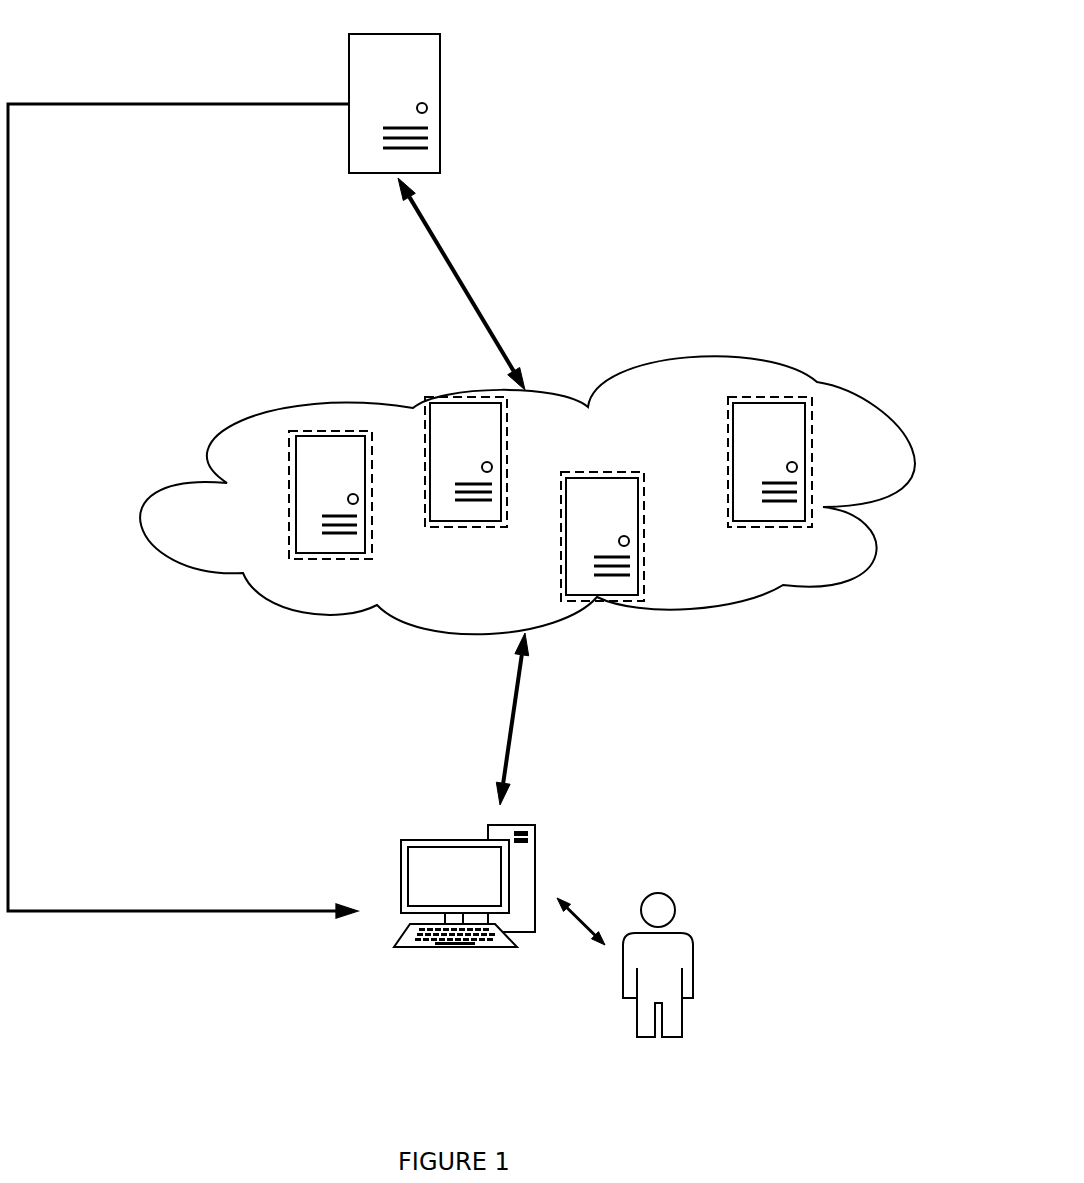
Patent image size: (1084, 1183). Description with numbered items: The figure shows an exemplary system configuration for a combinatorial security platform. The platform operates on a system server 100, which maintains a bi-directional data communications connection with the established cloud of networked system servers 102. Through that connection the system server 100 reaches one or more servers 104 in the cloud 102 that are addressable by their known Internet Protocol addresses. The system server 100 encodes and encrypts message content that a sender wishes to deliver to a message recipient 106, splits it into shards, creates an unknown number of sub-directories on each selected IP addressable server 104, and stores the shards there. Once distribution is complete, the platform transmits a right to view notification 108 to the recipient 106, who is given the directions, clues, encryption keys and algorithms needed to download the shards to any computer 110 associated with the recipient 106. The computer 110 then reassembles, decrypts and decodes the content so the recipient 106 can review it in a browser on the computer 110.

The system server 100 is at (447, 57).
The cloud of networked system servers 102 is at (687, 353).
The IP addressable servers 104 is at (758, 533).
The message recipient 106 is at (697, 950).
The right to view notification 108 is at (182, 960).
The computer 110 is at (540, 836).